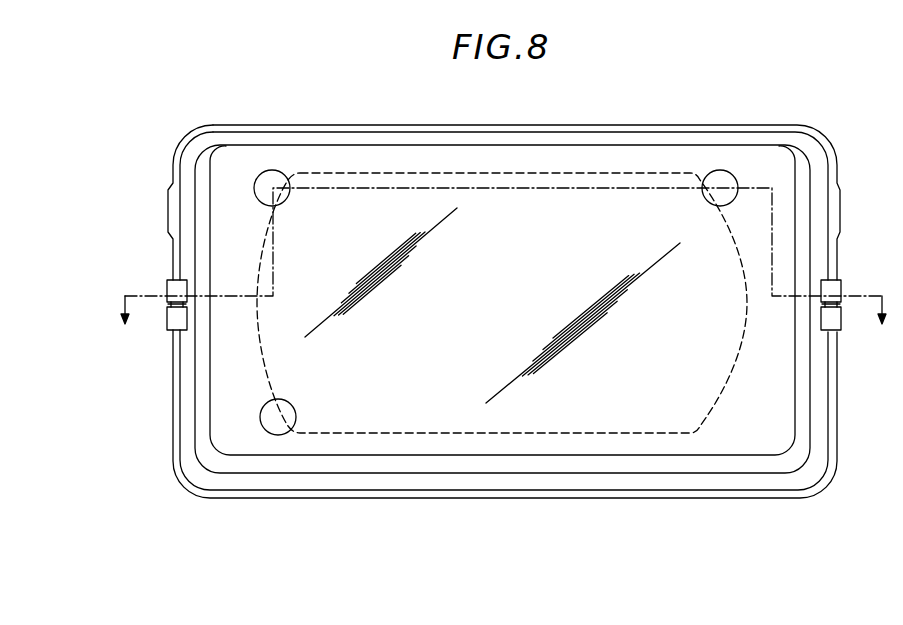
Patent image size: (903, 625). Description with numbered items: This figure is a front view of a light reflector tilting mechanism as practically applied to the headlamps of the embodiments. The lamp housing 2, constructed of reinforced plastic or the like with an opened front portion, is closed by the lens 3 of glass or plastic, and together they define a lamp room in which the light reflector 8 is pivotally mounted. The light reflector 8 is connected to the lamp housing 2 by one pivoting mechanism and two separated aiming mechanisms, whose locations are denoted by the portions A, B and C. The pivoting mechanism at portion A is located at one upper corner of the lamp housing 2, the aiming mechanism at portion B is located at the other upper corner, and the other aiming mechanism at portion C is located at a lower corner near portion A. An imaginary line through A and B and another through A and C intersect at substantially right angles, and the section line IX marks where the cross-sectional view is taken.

The lamp housing 2 is at (675, 125).
The lens 3 is at (402, 150).
The light reflector 8 is at (600, 433).
The pivoting mechanism portion A is at (267, 170).
The aiming mechanism portion B is at (733, 172).
The aiming mechanism portion C is at (276, 437).
The section line IX is at (500, 270).